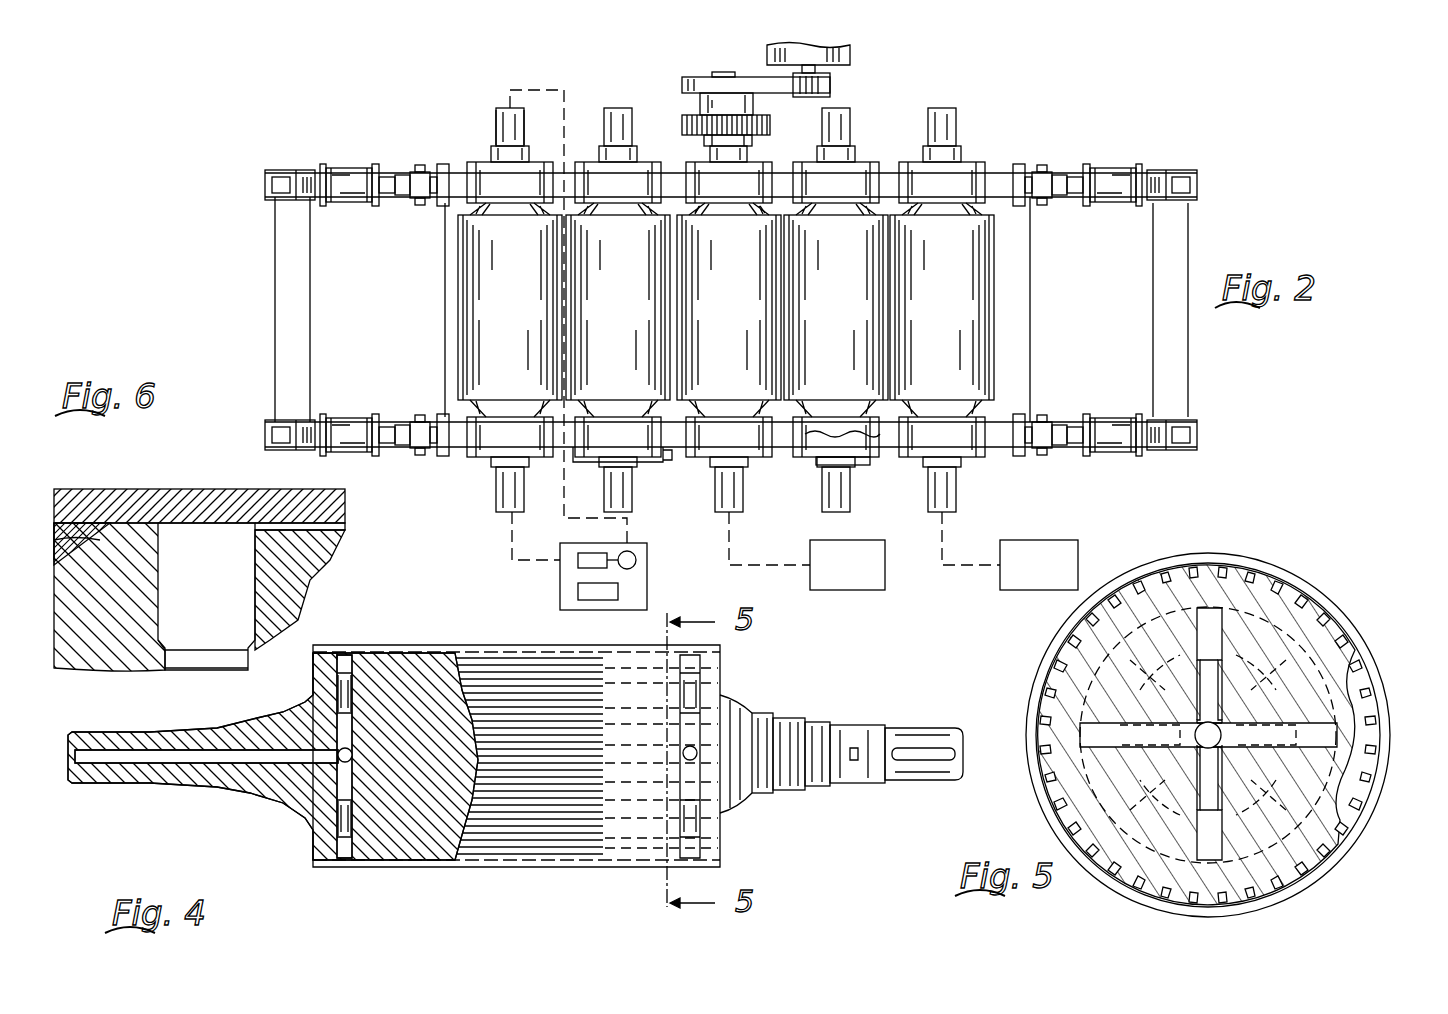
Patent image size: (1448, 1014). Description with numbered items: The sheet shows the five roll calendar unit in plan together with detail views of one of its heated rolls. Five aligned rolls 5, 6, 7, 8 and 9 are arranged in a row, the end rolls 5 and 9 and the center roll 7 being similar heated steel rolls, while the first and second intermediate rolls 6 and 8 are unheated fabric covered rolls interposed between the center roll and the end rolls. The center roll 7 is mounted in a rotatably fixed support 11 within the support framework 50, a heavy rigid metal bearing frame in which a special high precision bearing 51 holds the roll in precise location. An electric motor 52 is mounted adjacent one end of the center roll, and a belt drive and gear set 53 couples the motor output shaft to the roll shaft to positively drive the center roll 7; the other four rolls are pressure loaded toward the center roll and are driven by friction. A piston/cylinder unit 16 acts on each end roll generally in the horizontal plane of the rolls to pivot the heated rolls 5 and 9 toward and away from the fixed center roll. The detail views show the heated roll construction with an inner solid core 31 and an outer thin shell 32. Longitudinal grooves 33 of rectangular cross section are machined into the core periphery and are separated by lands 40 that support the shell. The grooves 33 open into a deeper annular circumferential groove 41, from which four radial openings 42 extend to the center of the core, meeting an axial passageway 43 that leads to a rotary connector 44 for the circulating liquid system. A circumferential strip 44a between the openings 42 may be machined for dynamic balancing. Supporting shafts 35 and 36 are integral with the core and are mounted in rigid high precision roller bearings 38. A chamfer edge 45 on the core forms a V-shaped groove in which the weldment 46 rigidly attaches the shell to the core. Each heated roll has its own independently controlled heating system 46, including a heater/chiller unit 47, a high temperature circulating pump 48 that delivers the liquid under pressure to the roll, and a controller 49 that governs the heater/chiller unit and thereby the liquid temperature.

In FIG. 2, the end roll 5 is at (948, 317).
In FIG. 2, the first intermediate roll 6 is at (842, 317).
In FIG. 2, the center roll 7 is at (735, 317).
In FIG. 4, the center roll 7 is at (463, 645).
In FIG. 2, the second intermediate roll 8 is at (624, 317).
In FIG. 2, the end roll 9 is at (516, 317).
In FIG. 2, the rotatably fixed support 11 is at (700, 458).
In FIG. 2, the piston/cylinder unit 16 is at (355, 205).
In FIG. 6, the inner solid core 31 is at (112, 645).
In FIG. 4, the inner solid core 31 is at (420, 795).
In FIG. 5, the inner solid core 31 is at (1350, 800).
In FIG. 6, the outer thin shell 32 is at (212, 502).
In FIG. 4, the outer thin shell 32 is at (404, 867).
In FIG. 5, the outer thin shell 32 is at (1330, 848).
In FIG. 4, the longitudinal grooves 33 is at (478, 858).
In FIG. 5, the longitudinal grooves 33 is at (1248, 565).
In FIG. 4, the supporting shaft 35 is at (240, 800).
In FIG. 4, the supporting shaft 36 is at (799, 712).
In FIG. 2, the roller bearings 38 is at (745, 440).
In FIG. 5, the lands 40 is at (1158, 575).
In FIG. 6, the annular circumferential groove 41 is at (210, 583).
In FIG. 4, the annular circumferential groove 41 is at (342, 862).
In FIG. 5, the annular circumferential groove 41 is at (1080, 655).
In FIG. 6, the radial openings 42 is at (240, 660).
In FIG. 4, the radial openings 42 is at (352, 703).
In FIG. 5, the radial openings 42 is at (1225, 625).
In FIG. 4, the axial passageway 43 is at (182, 758).
In FIG. 5, the axial passageway 43 is at (1198, 725).
In FIG. 2, the rotary connector 44 is at (496, 122).
In FIG. 5, the circumferential strip 44a is at (1330, 608).
In FIG. 6, the chamfer edge 45 is at (100, 540).
In FIG. 4, the chamfer edge 45 is at (313, 675).
In FIG. 2, the heating system 46 is at (560, 590).
In FIG. 6, the heating system 46 is at (55, 540).
In FIG. 4, the heating system 46 is at (310, 650).
In FIG. 5, the heating system 46 is at (1378, 690).
In FIG. 2, the heater/chiller unit 47 is at (585, 553).
In FIG. 2, the circulating pump 48 is at (636, 556).
In FIG. 2, the controller 49 is at (618, 591).
In FIG. 2, the support framework 50 is at (886, 178).
In FIG. 2, the bearing 51 is at (743, 212).
In FIG. 2, the electric motor 52 is at (850, 65).
In FIG. 2, the belt drive and gear set 53 is at (682, 80).